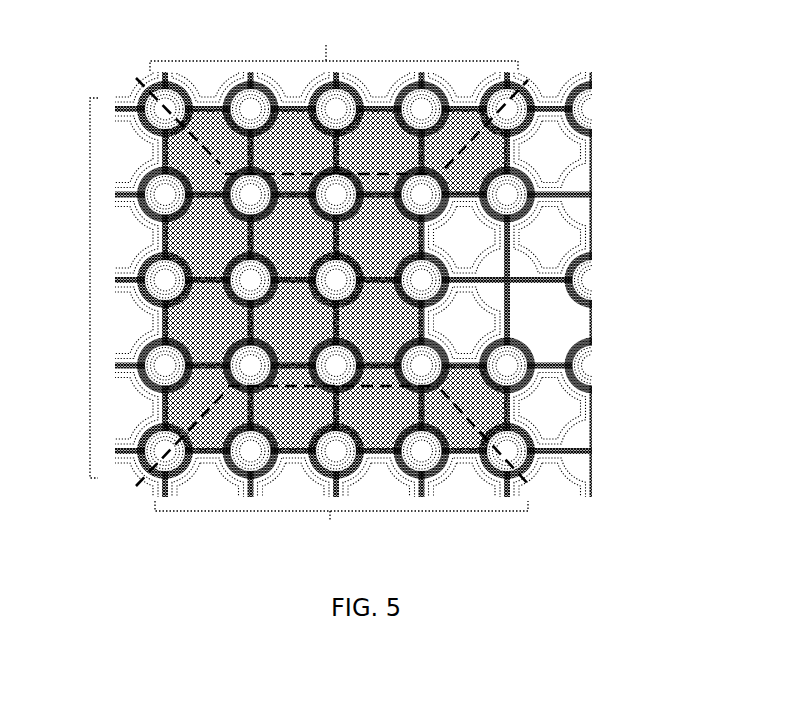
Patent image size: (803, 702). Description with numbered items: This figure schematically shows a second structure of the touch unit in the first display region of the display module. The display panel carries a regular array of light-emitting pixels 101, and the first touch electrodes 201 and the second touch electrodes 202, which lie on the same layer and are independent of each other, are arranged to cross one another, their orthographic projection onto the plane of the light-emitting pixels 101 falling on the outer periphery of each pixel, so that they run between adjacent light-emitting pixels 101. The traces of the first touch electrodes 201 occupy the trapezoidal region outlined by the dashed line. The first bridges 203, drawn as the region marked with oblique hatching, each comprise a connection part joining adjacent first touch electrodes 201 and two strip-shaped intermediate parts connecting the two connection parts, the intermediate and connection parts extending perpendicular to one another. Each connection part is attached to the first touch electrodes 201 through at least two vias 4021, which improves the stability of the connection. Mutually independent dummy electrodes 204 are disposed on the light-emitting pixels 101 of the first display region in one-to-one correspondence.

The light-emitting pixel 101 is at (548, 285).
The via 4021 is at (578, 162).
The first bridge 203 is at (570, 440).
The dummy electrode 204 is at (545, 320).
The first touch electrode 201 is at (339, 287).
The second touch electrode 202 is at (76, 290).